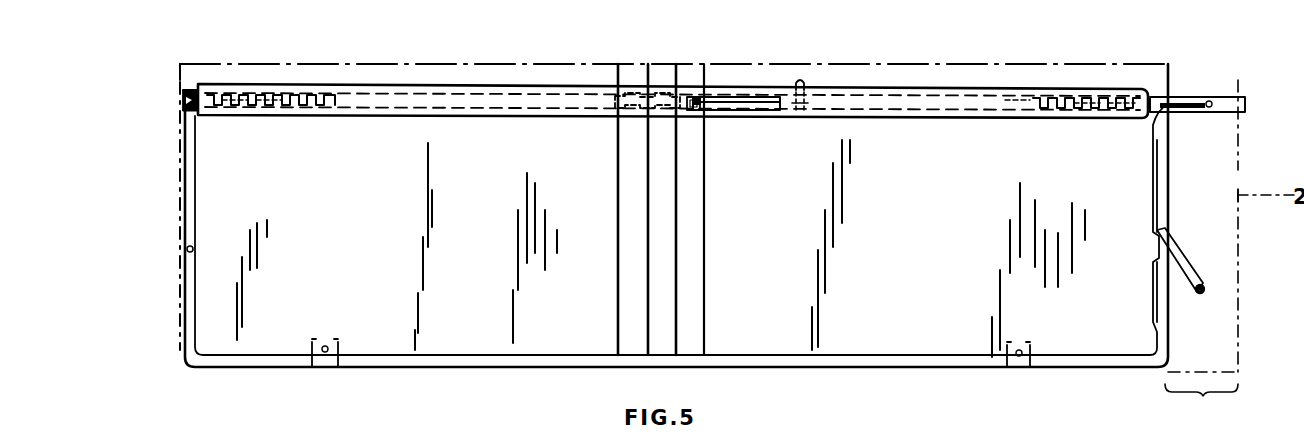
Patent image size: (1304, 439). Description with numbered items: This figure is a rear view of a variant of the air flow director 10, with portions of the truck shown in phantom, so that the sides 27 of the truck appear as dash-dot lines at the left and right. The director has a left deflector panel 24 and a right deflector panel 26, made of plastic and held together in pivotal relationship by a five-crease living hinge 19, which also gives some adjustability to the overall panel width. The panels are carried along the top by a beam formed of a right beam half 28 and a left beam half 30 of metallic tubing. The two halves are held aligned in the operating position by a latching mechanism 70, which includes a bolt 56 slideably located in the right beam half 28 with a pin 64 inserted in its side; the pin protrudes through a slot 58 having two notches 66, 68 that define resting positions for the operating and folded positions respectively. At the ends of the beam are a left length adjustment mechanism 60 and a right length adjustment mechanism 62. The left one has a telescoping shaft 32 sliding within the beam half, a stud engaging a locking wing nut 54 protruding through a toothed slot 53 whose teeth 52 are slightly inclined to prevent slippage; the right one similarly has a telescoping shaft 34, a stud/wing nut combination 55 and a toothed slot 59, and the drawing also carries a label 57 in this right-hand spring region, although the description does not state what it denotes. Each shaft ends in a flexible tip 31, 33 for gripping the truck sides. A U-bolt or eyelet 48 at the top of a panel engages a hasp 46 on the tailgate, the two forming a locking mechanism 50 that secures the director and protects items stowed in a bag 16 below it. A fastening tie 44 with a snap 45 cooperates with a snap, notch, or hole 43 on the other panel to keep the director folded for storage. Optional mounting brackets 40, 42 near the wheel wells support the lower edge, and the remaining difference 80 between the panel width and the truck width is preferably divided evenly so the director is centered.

The sunroof assembly 10 is at (136, 85).
The bag 16 is at (195, 320).
The five-crease living hinge 19 is at (600, 322).
The left deflector panel 24 is at (184, 175).
The right deflector panel 26 is at (1170, 205).
The sides of the truck 27 is at (178, 342).
The right beam half 28 is at (963, 88).
The left beam half 30 is at (396, 86).
The tip 31 is at (182, 90).
The telescoping shaft 32 is at (183, 103).
The tip 33 is at (1242, 100).
The telescoping shaft 34 is at (1222, 113).
The mounting bracket 40 is at (1036, 344).
The mounting bracket 42 is at (348, 338).
The snap, notch, or hole 43 is at (187, 250).
The fastening tie 44 is at (1198, 280).
The snap 45 is at (1205, 291).
The hasp 46 is at (211, 434).
The U-bolt or eyelet 48 is at (800, 78).
The locking mechanism 50 is at (289, 434).
The teeth 52 is at (241, 110).
The toothed slot 53 is at (275, 116).
The locking wing nut 54 is at (316, 110).
The stud/wing nut combination 55 is at (1112, 118).
The bolt 56 is at (659, 93).
The right spring 57 is at (1052, 110).
The slot 58 is at (742, 112).
The toothed slot 59 is at (1005, 110).
The left length adjustment mechanism 60 is at (268, 65).
The right length adjustment mechanism 62 is at (1089, 120).
The pin 64 is at (706, 97).
The notch 66 is at (706, 112).
The notch 68 is at (768, 112).
The latching mechanism 70 is at (664, 120).
The remaining difference 80 is at (1201, 306).